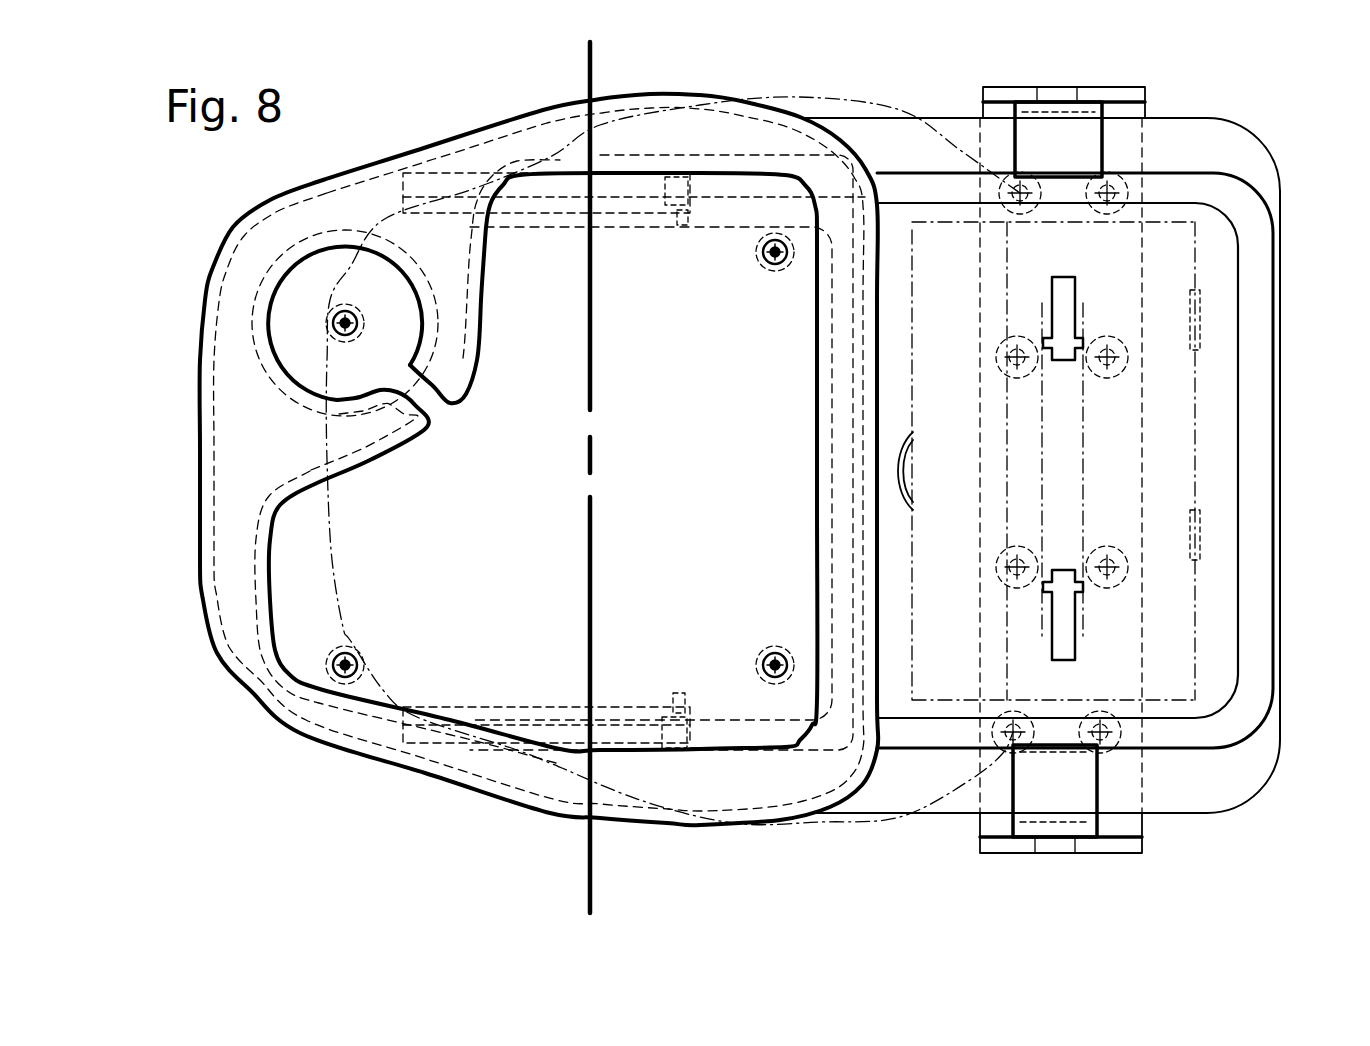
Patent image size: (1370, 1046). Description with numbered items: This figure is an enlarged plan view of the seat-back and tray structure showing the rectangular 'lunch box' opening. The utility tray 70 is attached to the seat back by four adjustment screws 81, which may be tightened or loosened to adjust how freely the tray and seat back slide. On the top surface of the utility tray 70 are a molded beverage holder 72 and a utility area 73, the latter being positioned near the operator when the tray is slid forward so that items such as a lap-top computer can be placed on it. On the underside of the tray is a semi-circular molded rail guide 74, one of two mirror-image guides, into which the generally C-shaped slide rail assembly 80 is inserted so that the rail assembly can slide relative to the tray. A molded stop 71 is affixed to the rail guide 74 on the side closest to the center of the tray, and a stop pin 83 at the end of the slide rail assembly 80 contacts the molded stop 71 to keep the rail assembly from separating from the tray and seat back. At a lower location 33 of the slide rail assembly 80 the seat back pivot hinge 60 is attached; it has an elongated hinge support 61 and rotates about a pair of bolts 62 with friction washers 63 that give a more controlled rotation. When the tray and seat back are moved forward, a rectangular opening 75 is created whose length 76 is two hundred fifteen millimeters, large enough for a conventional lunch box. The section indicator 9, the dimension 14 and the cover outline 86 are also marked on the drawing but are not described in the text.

The section line 9- 9 is at (632, 55).
The spacing distance 14 is at (1000, 252).
The lower location 33 is at (1057, 730).
The seat back pivot hinge 60 is at (1079, 104).
The elongated hinge support 61 is at (1133, 87).
The bolt 62 is at (1043, 90).
The friction washer 63 is at (1100, 117).
The utility tray 70 is at (243, 690).
The molded stop 71 is at (717, 215).
The molded beverage holder 72 is at (320, 270).
The utility area 73 is at (701, 458).
The molded rail guide 74 is at (427, 183).
The rectangular opening 75 is at (1080, 307).
The length 76 is at (1190, 205).
The slide rail assembly 80 is at (715, 745).
The adjustment screw 81 is at (333, 323).
The stop pin 83 is at (675, 695).
The cover 86 is at (1208, 118).